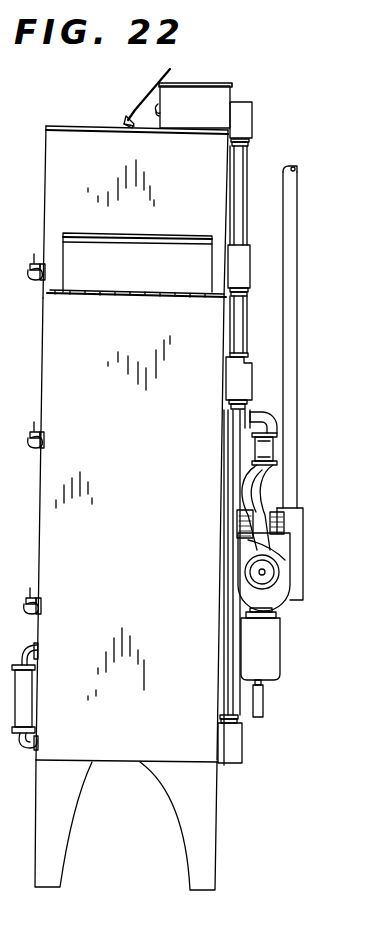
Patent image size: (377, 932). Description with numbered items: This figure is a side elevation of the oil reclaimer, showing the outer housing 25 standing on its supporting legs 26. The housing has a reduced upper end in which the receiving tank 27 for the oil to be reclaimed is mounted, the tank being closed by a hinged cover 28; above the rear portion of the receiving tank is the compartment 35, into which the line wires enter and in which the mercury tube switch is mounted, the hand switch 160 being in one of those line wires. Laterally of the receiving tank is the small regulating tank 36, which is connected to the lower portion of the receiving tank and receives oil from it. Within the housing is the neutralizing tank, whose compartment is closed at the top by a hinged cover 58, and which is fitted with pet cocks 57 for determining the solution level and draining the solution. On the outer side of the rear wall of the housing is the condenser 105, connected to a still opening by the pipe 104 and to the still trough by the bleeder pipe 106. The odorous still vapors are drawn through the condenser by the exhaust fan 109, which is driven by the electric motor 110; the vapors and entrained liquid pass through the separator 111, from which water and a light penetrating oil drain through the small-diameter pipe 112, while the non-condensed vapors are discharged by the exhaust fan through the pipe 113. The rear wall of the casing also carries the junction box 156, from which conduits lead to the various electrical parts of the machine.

The outer housing 25 is at (80, 361).
The supporting legs 26 is at (134, 857).
The receiving tank 27 is at (70, 167).
The hinged cover 28 is at (143, 93).
The compartment 35 is at (187, 98).
The regulating tank 36 is at (88, 255).
The pet cocks 57 is at (30, 588).
The hinged cover 58 is at (178, 286).
The pipe 104 is at (258, 428).
The condenser 105 is at (244, 513).
The bleeder pipe 106 is at (258, 466).
The exhaust fan 109 is at (252, 593).
The electric motor 110 is at (250, 575).
The separator 111 is at (266, 645).
The pipe 112 is at (258, 701).
The pipe 113 is at (285, 186).
The junction box 156 is at (240, 372).
The hand switch 160 is at (160, 109).